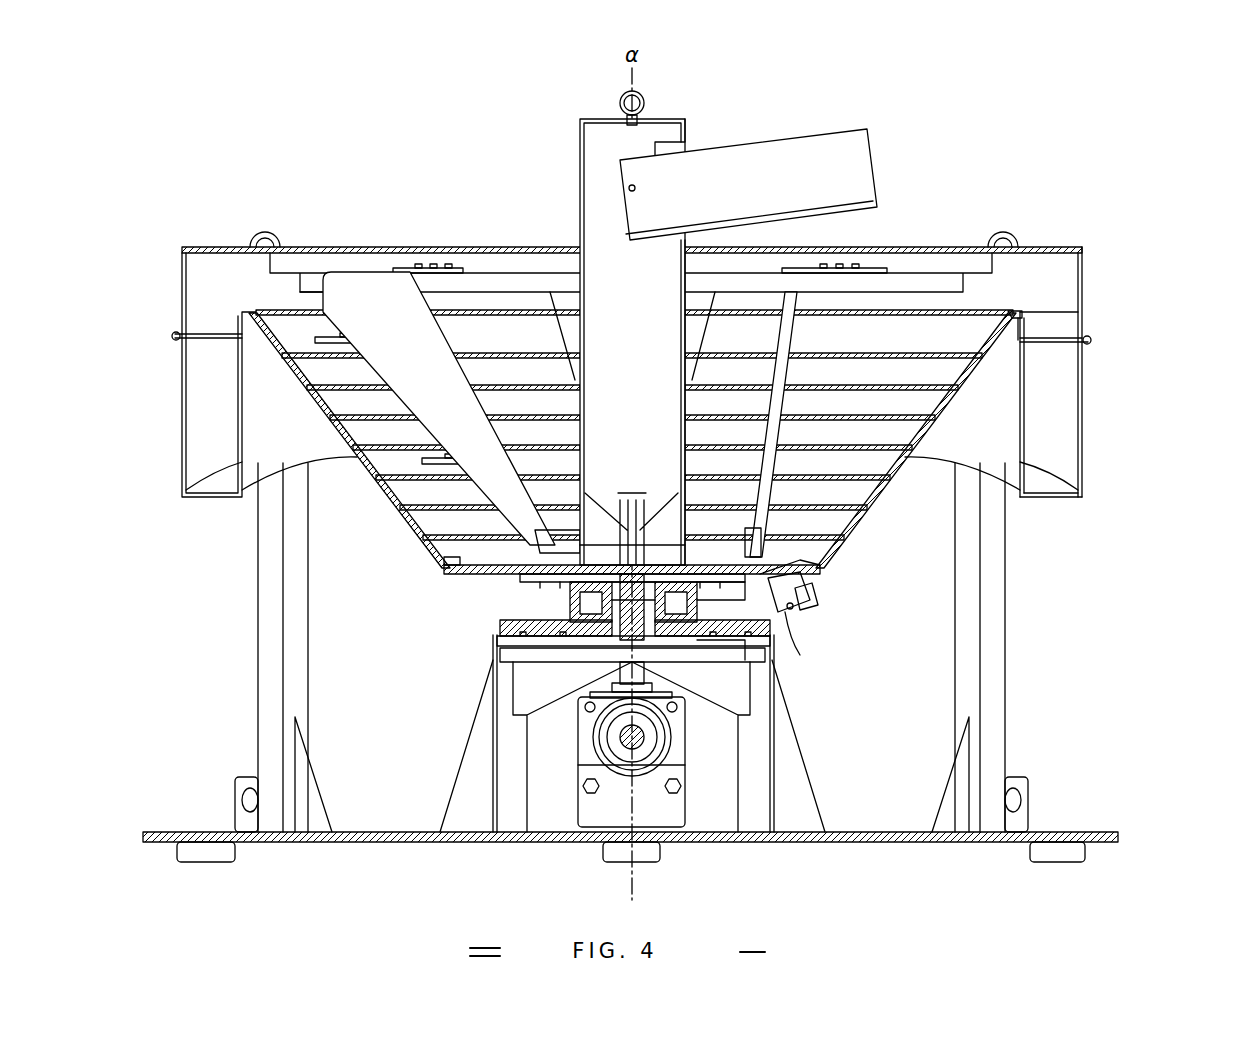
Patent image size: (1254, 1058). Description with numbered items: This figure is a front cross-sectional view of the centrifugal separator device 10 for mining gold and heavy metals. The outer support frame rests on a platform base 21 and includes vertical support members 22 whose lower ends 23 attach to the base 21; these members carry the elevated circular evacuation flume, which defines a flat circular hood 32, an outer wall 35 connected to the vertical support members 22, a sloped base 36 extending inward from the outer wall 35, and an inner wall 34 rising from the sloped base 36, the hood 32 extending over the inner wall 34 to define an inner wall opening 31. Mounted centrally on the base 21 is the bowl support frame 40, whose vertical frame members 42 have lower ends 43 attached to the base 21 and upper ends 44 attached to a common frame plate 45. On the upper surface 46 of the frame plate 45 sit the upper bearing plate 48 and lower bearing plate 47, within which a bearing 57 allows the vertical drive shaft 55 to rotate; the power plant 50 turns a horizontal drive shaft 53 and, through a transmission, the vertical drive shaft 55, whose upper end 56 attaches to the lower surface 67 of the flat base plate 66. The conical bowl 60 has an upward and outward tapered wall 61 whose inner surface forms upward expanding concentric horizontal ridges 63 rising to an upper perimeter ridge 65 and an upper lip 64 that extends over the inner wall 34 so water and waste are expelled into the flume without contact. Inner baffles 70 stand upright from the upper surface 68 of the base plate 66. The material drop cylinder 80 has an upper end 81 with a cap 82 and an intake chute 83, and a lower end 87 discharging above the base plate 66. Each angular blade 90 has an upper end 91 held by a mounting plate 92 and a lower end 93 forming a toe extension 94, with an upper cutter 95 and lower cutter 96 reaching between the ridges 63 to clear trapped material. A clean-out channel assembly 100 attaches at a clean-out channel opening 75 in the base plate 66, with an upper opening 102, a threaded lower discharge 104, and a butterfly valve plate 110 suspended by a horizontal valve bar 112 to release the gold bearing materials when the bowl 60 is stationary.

The centrifugal separator device 10 is at (1120, 99).
The platform base 21 is at (180, 832).
The vertical support members 22 is at (1005, 650).
The lower end 23 is at (990, 832).
The inner wall opening 31 is at (1050, 272).
The hood 32 is at (905, 248).
The inner wall 34 is at (1036, 388).
The outer wall 35 is at (1082, 405).
The sloped base 36 is at (1045, 500).
The bowl support frame 40 is at (497, 790).
The vertical frame members 42 is at (510, 815).
The lower ends 43 is at (795, 820).
The upper ends 44 is at (512, 660).
The frame plate 45 is at (500, 648).
The upper surface 46 is at (700, 660).
The lower bearing plate 47 is at (705, 645).
The upper bearing plate 48 is at (722, 632).
The power plant 50 is at (688, 810).
The horizontal drive shaft 53 is at (628, 748).
The vertical drive shaft 55 is at (625, 665).
The upper end 56 is at (660, 606).
The bearing 57 is at (527, 700).
The conical bowl 60 is at (968, 410).
The tapered wall 61 is at (998, 302).
The concentric horizontal ridges 63 is at (355, 425).
The upper lip 64 is at (1026, 316).
The upper perimeter ridge 65 is at (1030, 344).
The flat base plate 66 is at (448, 570).
The lower surface 67 is at (470, 580).
The upper surface 68 is at (455, 560).
The inner baffles 70 is at (622, 500).
The clean-out channel opening 75 is at (855, 525).
The material drop cylinder 80 is at (578, 125).
The upper end 81 is at (578, 212).
The cap 82 is at (662, 120).
The intake chute 83 is at (880, 150).
The lower end 87 is at (685, 540).
The angular blade 90 is at (345, 290).
The upper end 91 is at (313, 303).
The mounting plate 92 is at (372, 272).
The lower end 93 is at (522, 600).
The toe extension 94 is at (557, 578).
The upper cutter 95 is at (380, 340).
The lower cutter 96 is at (437, 470).
The clean-out channel assembly 100 is at (818, 590).
The upper opening 102 is at (822, 560).
The lower discharge 104 is at (805, 606).
The butterfly valve plate 110 is at (782, 595).
The horizontal valve bar 112 is at (792, 612).